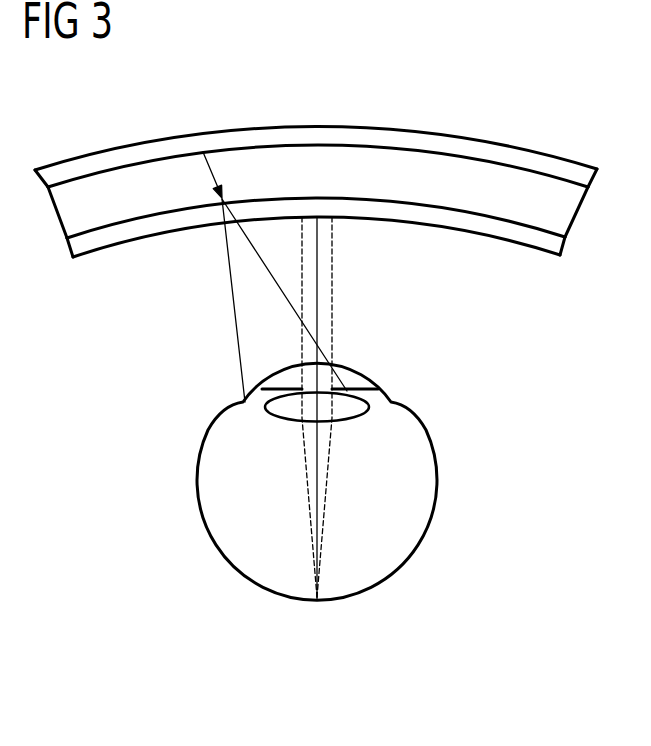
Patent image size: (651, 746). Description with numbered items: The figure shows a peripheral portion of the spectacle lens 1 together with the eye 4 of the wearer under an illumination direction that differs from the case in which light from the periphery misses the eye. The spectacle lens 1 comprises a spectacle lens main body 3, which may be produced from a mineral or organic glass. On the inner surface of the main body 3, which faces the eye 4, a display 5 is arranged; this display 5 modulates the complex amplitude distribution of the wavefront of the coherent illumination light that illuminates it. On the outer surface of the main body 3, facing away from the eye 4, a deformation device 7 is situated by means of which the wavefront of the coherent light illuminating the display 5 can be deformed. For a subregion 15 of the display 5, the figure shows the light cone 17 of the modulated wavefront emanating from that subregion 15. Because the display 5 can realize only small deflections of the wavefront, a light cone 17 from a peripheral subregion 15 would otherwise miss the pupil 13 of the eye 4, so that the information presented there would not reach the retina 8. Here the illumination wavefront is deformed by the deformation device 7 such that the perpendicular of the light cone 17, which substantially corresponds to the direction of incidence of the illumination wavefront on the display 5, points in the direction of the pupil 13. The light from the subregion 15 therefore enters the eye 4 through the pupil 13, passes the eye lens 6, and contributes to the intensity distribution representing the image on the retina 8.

The spectacle lens 1 is at (432, 82).
The spectacle lens main body 3 is at (510, 182).
The display 5 is at (372, 210).
The deformation device 7 is at (363, 136).
The subregion 15 is at (233, 186).
The light cone 17 is at (247, 306).
The pupil 13 is at (330, 374).
The eye 4 is at (426, 482).
The eye lens 6 is at (350, 408).
The retina 8 is at (407, 558).